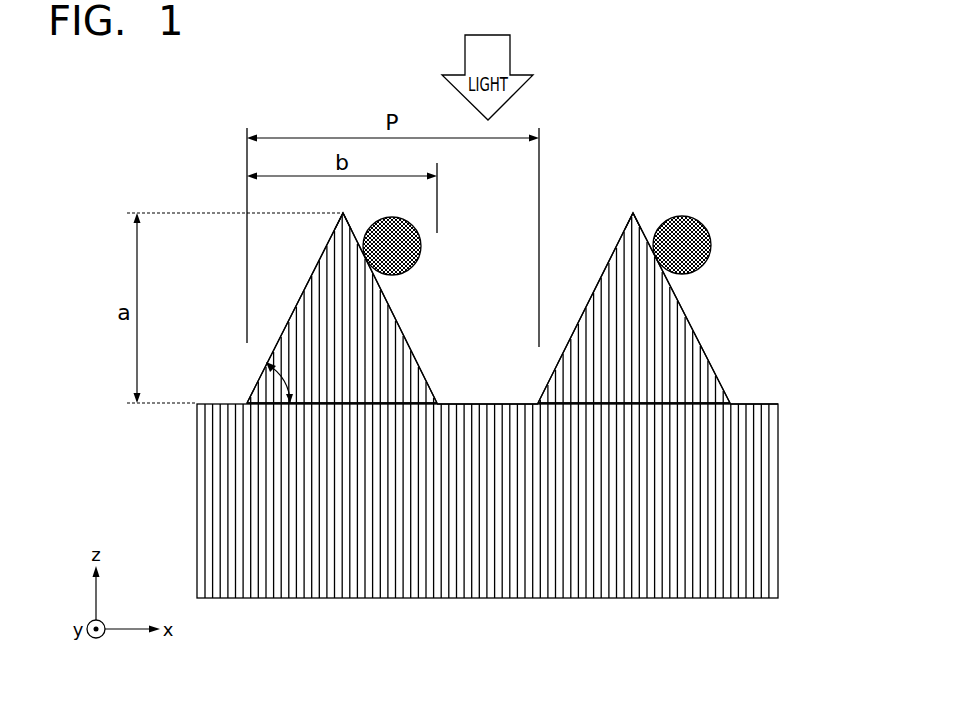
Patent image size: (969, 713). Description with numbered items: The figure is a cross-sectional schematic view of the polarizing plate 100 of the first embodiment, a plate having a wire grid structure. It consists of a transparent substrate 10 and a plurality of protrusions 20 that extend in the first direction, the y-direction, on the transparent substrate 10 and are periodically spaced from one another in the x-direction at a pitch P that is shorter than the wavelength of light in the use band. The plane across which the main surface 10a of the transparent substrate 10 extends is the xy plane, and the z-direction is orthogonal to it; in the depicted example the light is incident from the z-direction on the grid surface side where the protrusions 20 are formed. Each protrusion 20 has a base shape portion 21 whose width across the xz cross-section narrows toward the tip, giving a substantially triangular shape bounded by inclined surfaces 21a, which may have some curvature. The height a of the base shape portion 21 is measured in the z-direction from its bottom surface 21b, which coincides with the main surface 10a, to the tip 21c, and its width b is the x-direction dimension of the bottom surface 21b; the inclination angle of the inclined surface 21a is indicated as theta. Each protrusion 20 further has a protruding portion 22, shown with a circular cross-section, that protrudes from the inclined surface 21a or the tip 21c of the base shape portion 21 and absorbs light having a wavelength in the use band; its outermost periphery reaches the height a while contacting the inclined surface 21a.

The polarizing plate 100 is at (693, 114).
The transparent substrate 10 is at (752, 493).
The main surface 10a is at (753, 404).
The protrusion 20 is at (480, 217).
The base shape portion 21 is at (378, 337).
The inclined surface 21a is at (273, 352).
The bottom surface 21b is at (345, 408).
The tip 21c is at (633, 212).
The protruding portion 22 is at (421, 245).